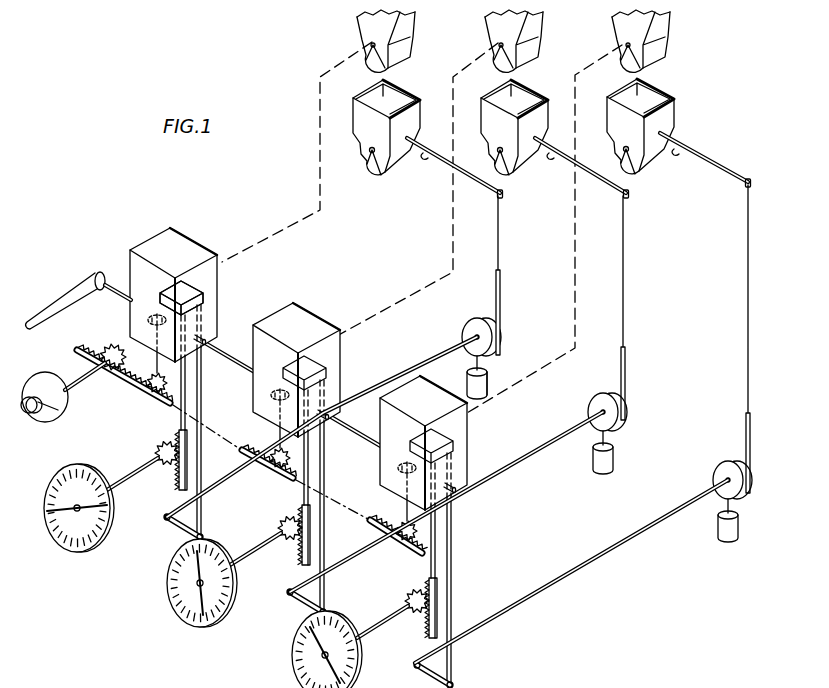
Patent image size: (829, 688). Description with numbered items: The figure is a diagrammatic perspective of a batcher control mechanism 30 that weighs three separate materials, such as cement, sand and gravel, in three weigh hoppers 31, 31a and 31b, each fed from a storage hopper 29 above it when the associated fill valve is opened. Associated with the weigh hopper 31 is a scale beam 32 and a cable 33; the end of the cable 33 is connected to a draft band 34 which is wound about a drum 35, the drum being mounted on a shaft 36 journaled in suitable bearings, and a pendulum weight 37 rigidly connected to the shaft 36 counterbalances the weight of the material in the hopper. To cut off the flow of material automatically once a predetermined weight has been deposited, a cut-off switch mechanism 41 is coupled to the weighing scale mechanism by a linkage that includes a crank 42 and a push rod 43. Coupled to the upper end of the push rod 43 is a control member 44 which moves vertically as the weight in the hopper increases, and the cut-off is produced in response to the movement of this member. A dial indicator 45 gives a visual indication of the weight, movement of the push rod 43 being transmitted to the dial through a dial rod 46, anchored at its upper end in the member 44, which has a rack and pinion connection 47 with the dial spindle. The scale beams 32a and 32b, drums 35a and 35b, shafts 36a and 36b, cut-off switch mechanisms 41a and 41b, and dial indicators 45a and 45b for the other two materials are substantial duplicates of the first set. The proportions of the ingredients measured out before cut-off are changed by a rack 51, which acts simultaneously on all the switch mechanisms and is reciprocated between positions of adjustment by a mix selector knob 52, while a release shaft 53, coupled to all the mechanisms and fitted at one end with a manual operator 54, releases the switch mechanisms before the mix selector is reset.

The storage hopper 29 is at (368, 33).
The batcher control mechanism 30 is at (122, 596).
The weigh hopper 31 is at (418, 108).
The weigh hopper 31a is at (548, 112).
The weigh hopper 31b is at (672, 112).
The scale beam 32 is at (440, 159).
The scale beam 32a is at (597, 177).
The scale beam 32b is at (750, 181).
The cable 33 is at (498, 236).
The draft band 34 is at (496, 287).
The drum 35 is at (481, 320).
The drum 35a is at (603, 392).
The drum 35b is at (722, 465).
The shaft 36 is at (450, 350).
The shaft 36a is at (549, 444).
The shaft 36b is at (663, 518).
The pendulum weight 37 is at (490, 385).
The cut-off switch mechanism 41 is at (186, 246).
The cut-off switch mechanism 41a is at (312, 318).
The cut-off switch mechanism 41b is at (437, 396).
The crank 42 is at (170, 523).
The push rod 43 is at (203, 409).
The control member 44 is at (205, 296).
The dial indicator 45 is at (81, 472).
The dial indicator 45a is at (208, 556).
The dial indicator 45b is at (341, 628).
The dial rod 46 is at (178, 429).
The rack and pinion connection 47 is at (170, 476).
The rack 51 is at (123, 384).
The mix selector knob 52 is at (30, 385).
The release shaft 53 is at (114, 292).
The manual operator 54 is at (72, 290).